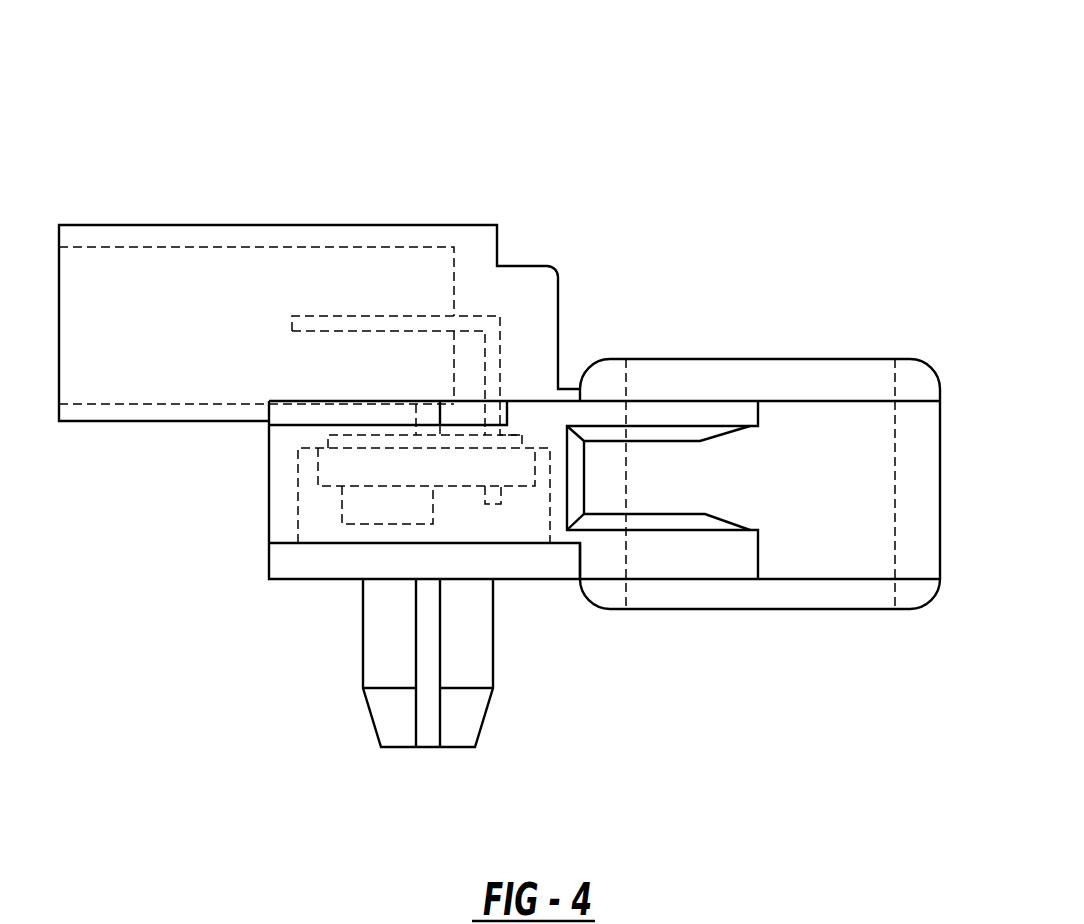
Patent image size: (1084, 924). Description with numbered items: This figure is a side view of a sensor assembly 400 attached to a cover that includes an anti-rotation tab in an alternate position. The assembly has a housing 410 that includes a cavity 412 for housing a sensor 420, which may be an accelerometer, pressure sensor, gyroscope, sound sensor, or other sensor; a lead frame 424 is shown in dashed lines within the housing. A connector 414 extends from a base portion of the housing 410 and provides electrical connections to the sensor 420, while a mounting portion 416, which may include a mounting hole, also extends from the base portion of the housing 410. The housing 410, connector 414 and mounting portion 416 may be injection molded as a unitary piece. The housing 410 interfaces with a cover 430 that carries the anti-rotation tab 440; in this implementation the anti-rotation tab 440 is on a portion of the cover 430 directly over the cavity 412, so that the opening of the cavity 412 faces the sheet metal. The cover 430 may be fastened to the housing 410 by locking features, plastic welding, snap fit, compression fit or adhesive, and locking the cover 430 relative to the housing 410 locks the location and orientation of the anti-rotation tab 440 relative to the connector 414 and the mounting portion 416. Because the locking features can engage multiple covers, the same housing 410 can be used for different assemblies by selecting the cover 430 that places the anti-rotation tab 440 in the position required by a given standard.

The sensor assembly 400 is at (499, 440).
The housing 410 is at (277, 471).
The cavity 412 is at (508, 523).
The connector 414 is at (172, 290).
The mounting portion 416 is at (828, 528).
The sensor 420 is at (340, 471).
The lead frame 424 is at (377, 322).
The cover 430 is at (315, 560).
The anti-rotation tab 440 is at (383, 651).